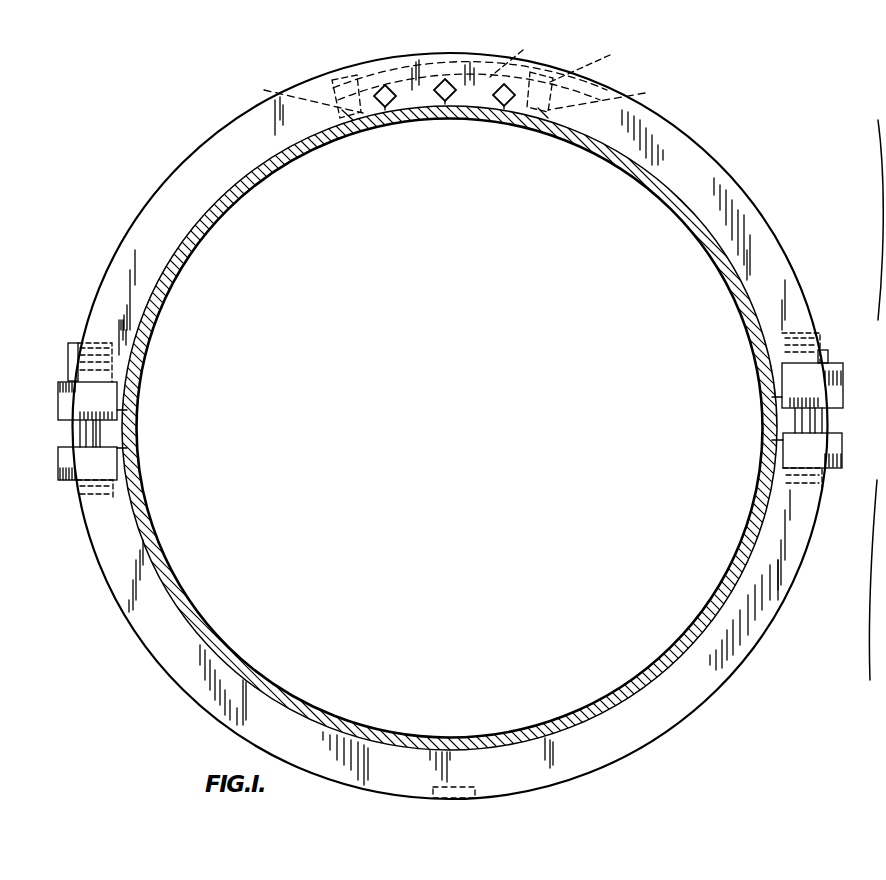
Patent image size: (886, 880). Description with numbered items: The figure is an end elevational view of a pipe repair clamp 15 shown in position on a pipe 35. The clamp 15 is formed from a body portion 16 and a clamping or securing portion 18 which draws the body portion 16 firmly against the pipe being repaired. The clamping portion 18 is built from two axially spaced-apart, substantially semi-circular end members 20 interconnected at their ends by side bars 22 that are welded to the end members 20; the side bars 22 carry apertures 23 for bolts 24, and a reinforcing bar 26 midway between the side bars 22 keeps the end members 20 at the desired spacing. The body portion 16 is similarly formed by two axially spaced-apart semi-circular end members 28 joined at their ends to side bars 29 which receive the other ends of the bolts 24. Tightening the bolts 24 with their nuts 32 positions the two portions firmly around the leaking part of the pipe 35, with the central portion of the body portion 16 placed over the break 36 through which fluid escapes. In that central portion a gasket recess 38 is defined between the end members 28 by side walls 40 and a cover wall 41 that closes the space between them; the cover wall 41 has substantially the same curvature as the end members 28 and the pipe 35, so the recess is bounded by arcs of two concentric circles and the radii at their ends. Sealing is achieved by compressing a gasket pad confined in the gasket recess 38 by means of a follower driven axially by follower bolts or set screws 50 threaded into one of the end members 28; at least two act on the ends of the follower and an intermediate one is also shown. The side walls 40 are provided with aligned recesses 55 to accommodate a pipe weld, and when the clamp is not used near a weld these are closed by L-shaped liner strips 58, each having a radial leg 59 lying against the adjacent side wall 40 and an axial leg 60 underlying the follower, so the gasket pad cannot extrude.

The clamp 15 is at (776, 185).
The body portion 16 is at (788, 257).
The clamping portion 18 is at (775, 612).
The end members 20 is at (790, 545).
The side bars 22 is at (62, 458).
The apertures 23 is at (820, 437).
The bolts 24 is at (85, 435).
The reinforcing bar 26 is at (475, 790).
The end members 28 is at (588, 88).
The side bars 29 is at (68, 403).
The nuts 32 is at (69, 368).
The pipe 35 is at (710, 246).
The break 36 is at (432, 108).
The gasket recess 38 is at (375, 108).
The side walls 40 is at (340, 82).
The cover wall 41 is at (519, 53).
The follower bolts or set screws 50 is at (503, 103).
The recesses 55 is at (456, 93).
The liner strips 58 is at (363, 110).
The radial leg 59 is at (592, 58).
The axial leg 60 is at (532, 120).